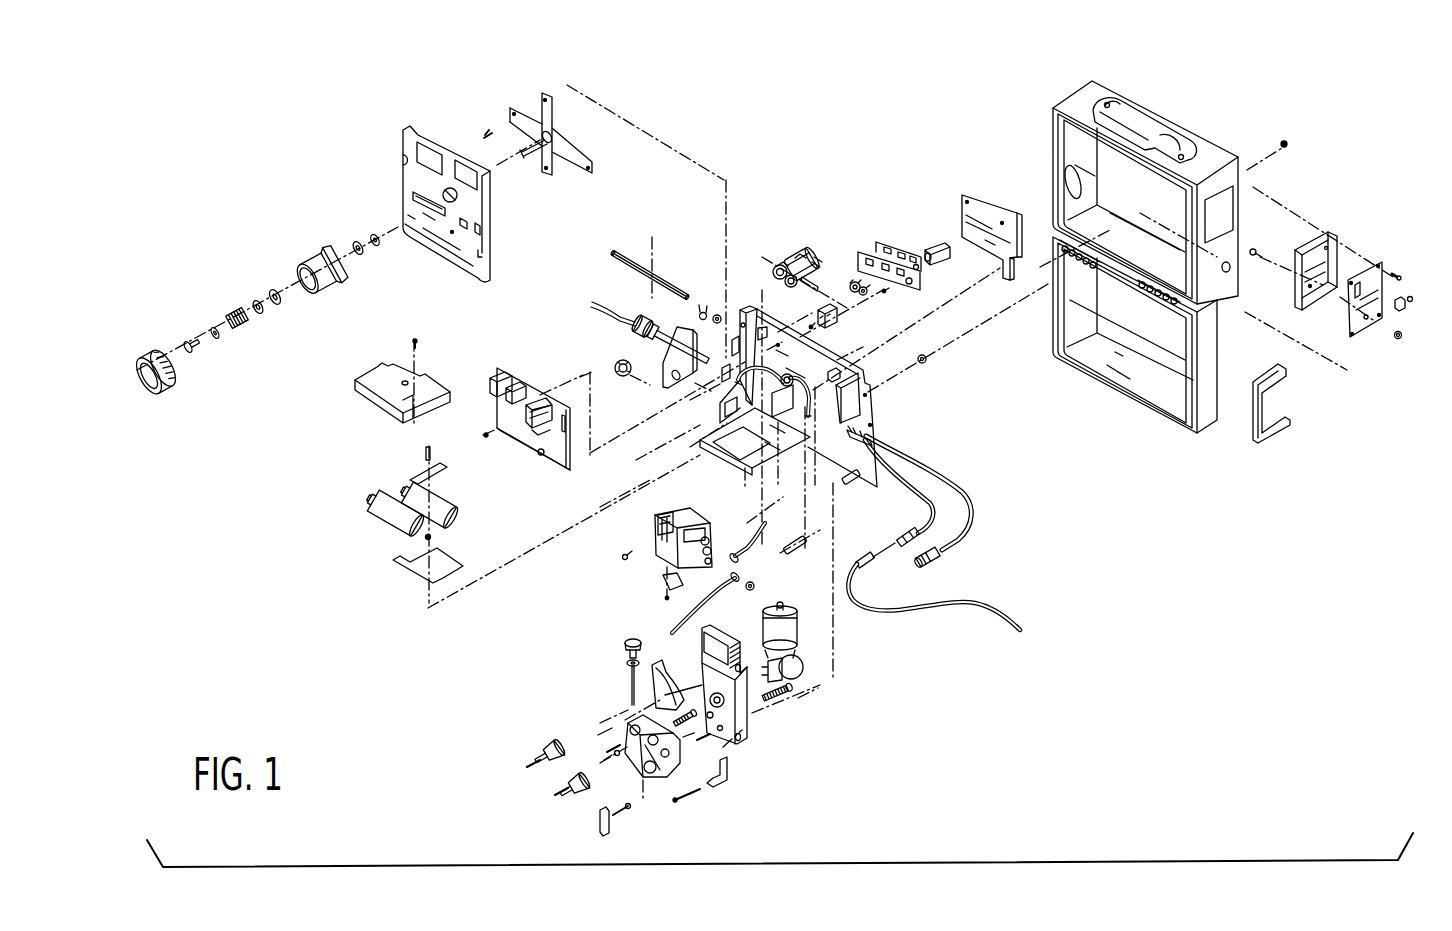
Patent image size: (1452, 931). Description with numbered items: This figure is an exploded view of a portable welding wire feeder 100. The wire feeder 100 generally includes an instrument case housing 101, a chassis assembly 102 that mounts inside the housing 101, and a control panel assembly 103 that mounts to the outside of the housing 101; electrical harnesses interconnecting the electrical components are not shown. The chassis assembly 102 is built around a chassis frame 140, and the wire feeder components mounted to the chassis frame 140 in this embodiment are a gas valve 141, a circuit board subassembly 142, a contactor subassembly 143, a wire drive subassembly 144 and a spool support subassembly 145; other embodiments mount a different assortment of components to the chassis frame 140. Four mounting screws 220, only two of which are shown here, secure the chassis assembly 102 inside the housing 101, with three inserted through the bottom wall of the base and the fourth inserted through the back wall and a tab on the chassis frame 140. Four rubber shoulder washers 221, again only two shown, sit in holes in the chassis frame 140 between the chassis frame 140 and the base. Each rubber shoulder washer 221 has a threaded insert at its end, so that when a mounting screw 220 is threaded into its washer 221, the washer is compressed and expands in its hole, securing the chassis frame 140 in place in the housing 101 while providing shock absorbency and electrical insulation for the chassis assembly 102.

The portable welding wire feeder 100 is at (1200, 613).
The instrument case housing 101 is at (1187, 101).
The chassis assembly 102 is at (877, 126).
The control panel assembly 103 is at (1369, 375).
The chassis frame 140 is at (871, 397).
The gas valve 141 is at (801, 252).
The circuit board subassembly 142 is at (533, 384).
The contactor subassembly 143 is at (615, 579).
The wire drive subassembly 144 is at (764, 774).
The spool support subassembly 145 is at (286, 233).
The mounting screw 220 is at (1286, 147).
The rubber shoulder washer 221 is at (718, 315).